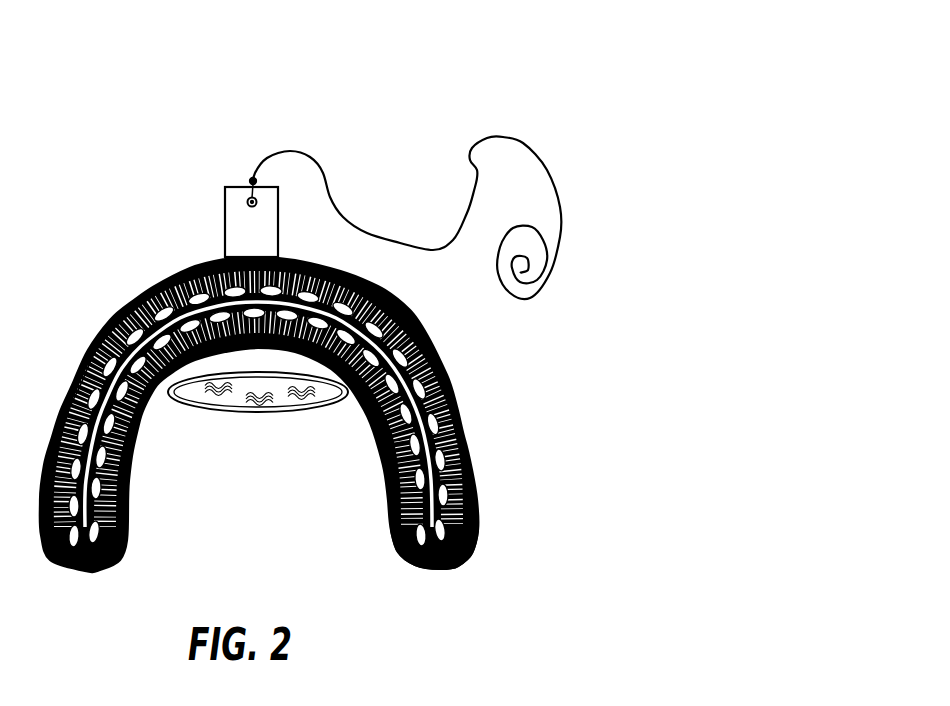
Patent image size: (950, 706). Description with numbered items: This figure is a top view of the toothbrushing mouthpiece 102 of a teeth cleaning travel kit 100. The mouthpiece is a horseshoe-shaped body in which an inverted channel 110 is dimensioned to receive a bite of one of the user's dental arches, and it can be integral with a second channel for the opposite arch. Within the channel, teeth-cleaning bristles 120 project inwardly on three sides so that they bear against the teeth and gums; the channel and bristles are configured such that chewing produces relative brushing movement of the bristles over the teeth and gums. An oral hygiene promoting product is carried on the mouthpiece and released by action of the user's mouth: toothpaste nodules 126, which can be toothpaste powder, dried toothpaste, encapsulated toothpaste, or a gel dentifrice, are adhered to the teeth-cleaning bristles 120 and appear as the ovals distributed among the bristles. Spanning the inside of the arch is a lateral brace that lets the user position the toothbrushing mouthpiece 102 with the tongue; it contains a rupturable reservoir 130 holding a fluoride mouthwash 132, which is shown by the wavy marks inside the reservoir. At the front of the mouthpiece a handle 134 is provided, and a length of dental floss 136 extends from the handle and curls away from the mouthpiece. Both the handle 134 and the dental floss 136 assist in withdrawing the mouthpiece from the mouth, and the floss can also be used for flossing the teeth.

The teeth cleaning travel kit 100 is at (223, 73).
The toothbrushing mouthpiece 102 is at (113, 323).
The inverted channel 110 is at (430, 570).
The teeth-cleaning bristles 120 is at (380, 302).
The toothpaste nodules 126 is at (428, 358).
The rupturable reservoir 130 is at (196, 388).
The fluoride mouthwash 132 is at (235, 402).
The handle 134 is at (223, 225).
The dental floss 136 is at (515, 134).